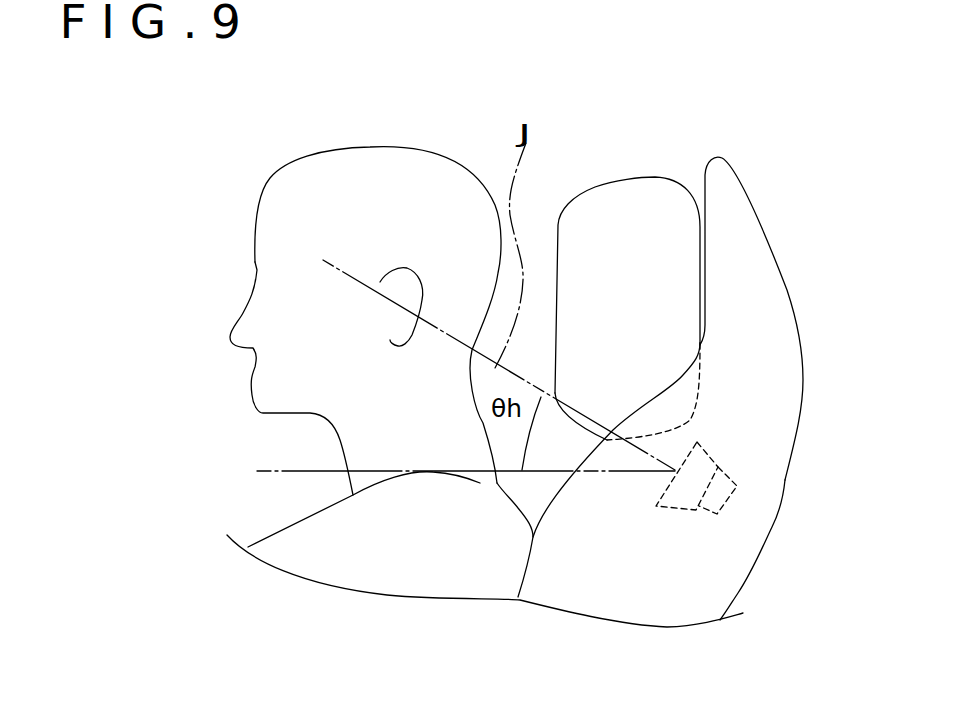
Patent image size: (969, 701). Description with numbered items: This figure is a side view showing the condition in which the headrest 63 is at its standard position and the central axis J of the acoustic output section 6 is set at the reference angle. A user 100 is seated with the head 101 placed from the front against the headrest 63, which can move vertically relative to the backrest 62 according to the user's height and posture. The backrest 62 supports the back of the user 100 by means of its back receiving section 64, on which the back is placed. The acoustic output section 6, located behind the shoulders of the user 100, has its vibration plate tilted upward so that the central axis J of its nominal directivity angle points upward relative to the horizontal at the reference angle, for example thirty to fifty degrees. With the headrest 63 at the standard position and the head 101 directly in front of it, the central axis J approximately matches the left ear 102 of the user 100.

The user 100 is at (387, 582).
The head 101 is at (342, 157).
The left ear 102 is at (407, 268).
The headrest 63 is at (635, 193).
The backrest 62 is at (782, 452).
The back receiving section 64 is at (772, 500).
The acoustic output section 6 is at (697, 440).